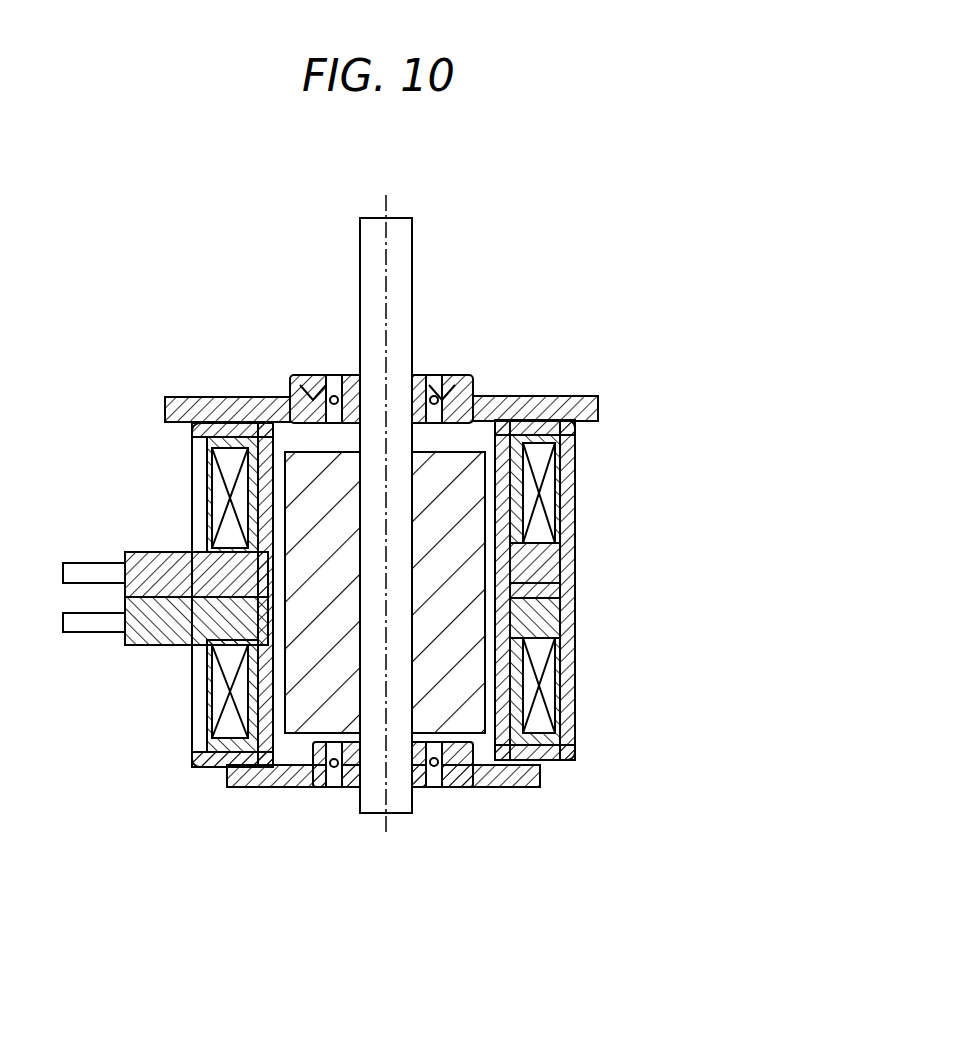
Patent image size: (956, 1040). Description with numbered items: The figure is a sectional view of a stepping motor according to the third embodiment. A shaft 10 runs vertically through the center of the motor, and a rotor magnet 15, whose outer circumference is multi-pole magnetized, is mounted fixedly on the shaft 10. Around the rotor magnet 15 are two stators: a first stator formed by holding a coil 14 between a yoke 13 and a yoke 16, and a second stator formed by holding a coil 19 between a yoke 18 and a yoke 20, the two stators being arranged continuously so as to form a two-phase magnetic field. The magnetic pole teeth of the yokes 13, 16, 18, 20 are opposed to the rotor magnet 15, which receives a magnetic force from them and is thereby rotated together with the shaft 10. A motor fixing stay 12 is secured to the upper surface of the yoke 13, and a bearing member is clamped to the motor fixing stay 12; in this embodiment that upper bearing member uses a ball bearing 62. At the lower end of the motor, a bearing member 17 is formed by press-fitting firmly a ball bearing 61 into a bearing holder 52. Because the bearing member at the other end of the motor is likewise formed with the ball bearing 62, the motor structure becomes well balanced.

The shaft 10 is at (404, 254).
The motor fixing stay 12 is at (569, 396).
The yoke 13 is at (195, 458).
The coil 14 is at (215, 519).
The rotor magnet 15 is at (462, 713).
The yoke 16 is at (578, 583).
The bearing member 17 is at (465, 853).
The yoke 18 is at (243, 658).
The coil 19 is at (215, 697).
The yoke 20 is at (195, 750).
The bearing holder 52 is at (259, 790).
The ball bearing 61 is at (433, 790).
The ball bearing 62 is at (441, 390).